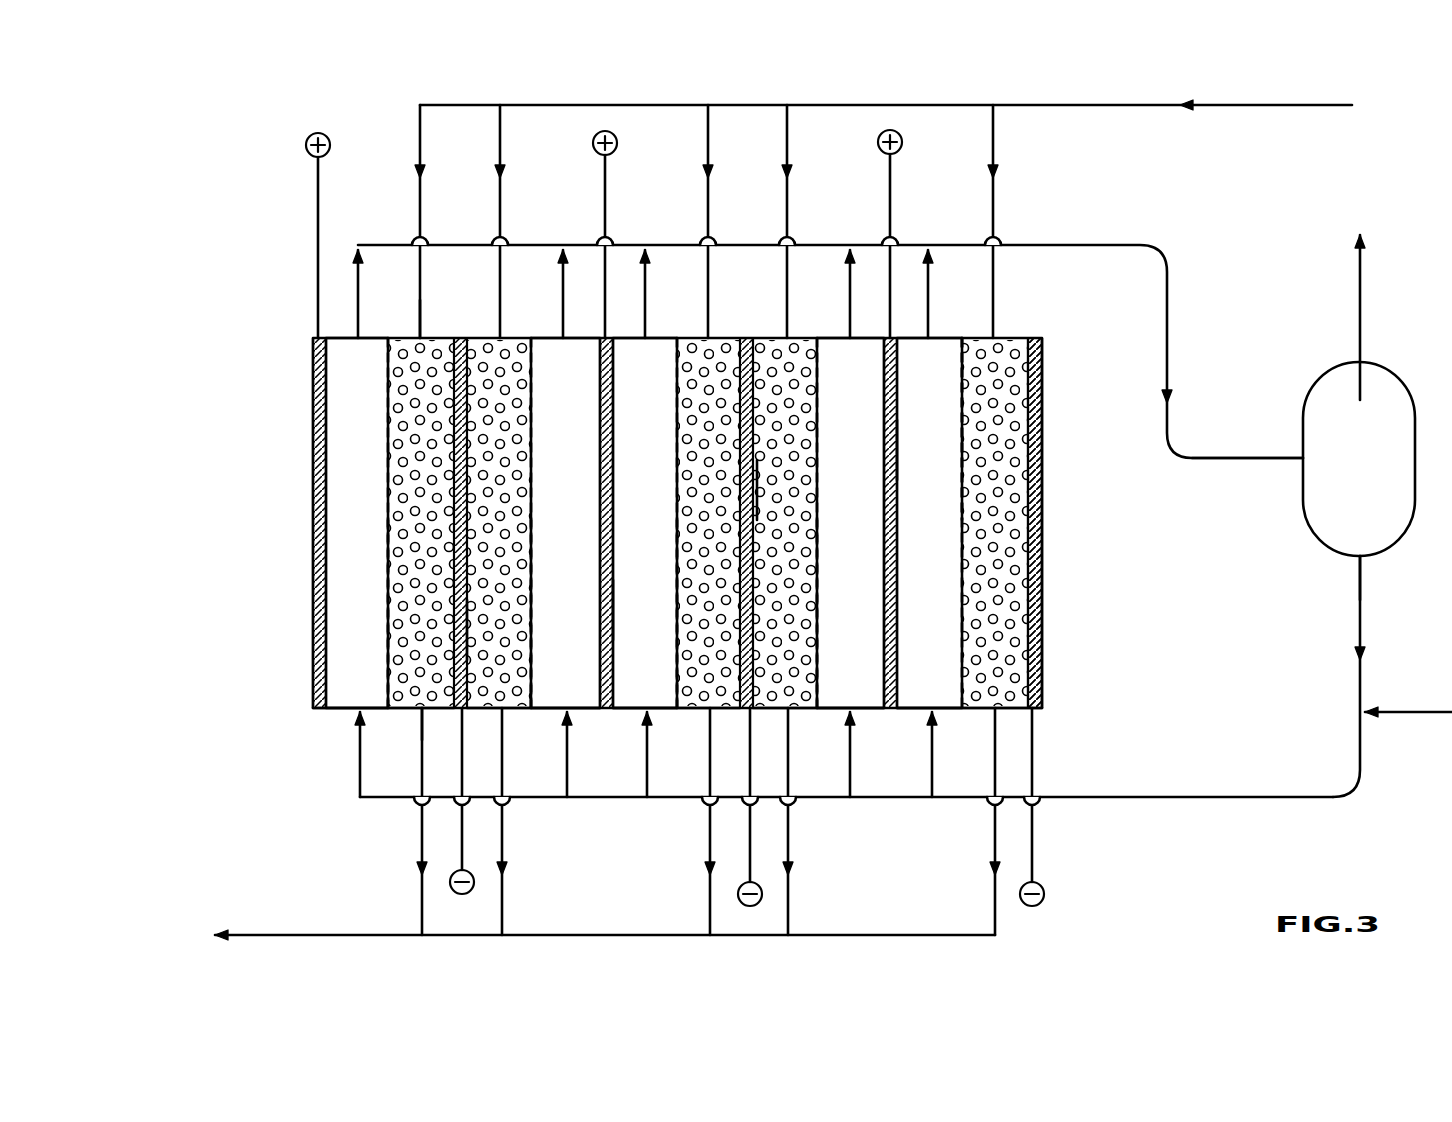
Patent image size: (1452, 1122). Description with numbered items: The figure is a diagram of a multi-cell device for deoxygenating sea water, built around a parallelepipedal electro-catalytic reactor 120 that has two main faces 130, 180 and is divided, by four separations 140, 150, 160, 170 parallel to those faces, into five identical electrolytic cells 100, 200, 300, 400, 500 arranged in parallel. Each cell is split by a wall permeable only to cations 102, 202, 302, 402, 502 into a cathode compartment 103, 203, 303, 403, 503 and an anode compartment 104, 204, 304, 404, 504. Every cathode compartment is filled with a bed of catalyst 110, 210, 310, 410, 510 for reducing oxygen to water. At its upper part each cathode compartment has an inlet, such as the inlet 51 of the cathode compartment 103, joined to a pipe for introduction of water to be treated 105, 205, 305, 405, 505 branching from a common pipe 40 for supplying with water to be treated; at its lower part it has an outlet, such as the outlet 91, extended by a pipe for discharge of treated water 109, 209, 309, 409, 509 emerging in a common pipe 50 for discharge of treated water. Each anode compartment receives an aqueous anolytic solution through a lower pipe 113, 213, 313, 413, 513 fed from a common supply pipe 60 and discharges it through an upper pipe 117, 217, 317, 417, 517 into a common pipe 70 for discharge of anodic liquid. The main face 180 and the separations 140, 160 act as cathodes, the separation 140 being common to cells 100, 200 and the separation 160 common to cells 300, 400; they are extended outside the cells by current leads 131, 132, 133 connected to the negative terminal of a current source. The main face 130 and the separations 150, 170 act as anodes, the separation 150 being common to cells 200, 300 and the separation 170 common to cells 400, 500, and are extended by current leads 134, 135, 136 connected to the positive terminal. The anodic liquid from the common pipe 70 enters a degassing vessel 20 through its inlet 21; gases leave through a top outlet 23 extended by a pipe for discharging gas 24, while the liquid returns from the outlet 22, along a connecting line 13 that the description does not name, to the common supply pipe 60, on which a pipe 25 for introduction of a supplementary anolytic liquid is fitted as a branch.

The conduit 13 is at (1362, 585).
The degassing vessel 20 is at (1323, 417).
The inlet 21 is at (1303, 458).
The outlet 22 is at (1360, 560).
The outlet for the gases 23 is at (1360, 362).
The pipe for discharging gas 24 is at (1362, 305).
The pipe for introduction of a supplementary liquid 25 is at (1445, 712).
The common pipe for supplying with water to be treated 40 is at (1245, 105).
The common pipe for discharge of treated water 50 is at (833, 932).
The inlet 51 is at (418, 333).
The common supply pipe 60 is at (1223, 790).
The common pipe for discharge of anodic liquid 70 is at (1167, 305).
The outlet 91 is at (410, 708).
The electrolytic cell 100 is at (335, 708).
The wall permeable only to cations 102 is at (388, 612).
The cathode compartment 103 is at (410, 597).
The anode compartment 104 is at (340, 518).
The pipe for introduction of water to be treated 105 is at (420, 145).
The pipe for discharge of treated water 109 is at (422, 847).
The bed of catalyst 110 is at (388, 410).
The pipe for the introduction of a liquid 113 is at (360, 778).
The pipe for the discharge of the liquid 117 is at (353, 280).
The electro-catalytic reactor 120 is at (272, 330).
The main face 130 is at (313, 462).
The current lead 131 is at (462, 865).
The current lead 132 is at (750, 870).
The current lead 133 is at (1032, 823).
The current lead 134 is at (313, 195).
The current lead 135 is at (605, 175).
The current lead 136 is at (890, 190).
The separation 140 is at (467, 633).
The separation 150 is at (613, 603).
The separation 160 is at (757, 487).
The separation 170 is at (898, 442).
The main face 180 is at (1043, 410).
The electrolytic cell 200 is at (567, 708).
The wall permeable only to cations 202 is at (533, 523).
The cathode compartment 203 is at (500, 570).
The anode compartment 204 is at (583, 672).
The pipe for introduction of water to be treated 205 is at (500, 143).
The pipe for discharge of treated water 209 is at (502, 840).
The bed of catalyst 210 is at (503, 430).
The pipe for the introduction of a liquid 213 is at (567, 750).
The pipe for the discharge of the liquid 217 is at (563, 318).
The electrolytic cell 300 is at (662, 708).
The wall permeable only to cations 302 is at (677, 487).
The cathode compartment 303 is at (677, 545).
The anode compartment 304 is at (664, 672).
The pipe for introduction of water to be treated 305 is at (708, 128).
The pipe for discharge of treated water 309 is at (710, 920).
The bed of catalyst 310 is at (677, 390).
The pipe for the introduction of a liquid 313 is at (647, 765).
The pipe for the discharge of the liquid 317 is at (648, 318).
The electrolytic cell 400 is at (827, 708).
The wall permeable only to cations 402 is at (820, 560).
The cathode compartment 403 is at (800, 418).
The anode compartment 404 is at (869, 672).
The pipe for introduction of water to be treated 405 is at (787, 157).
The pipe for discharge of treated water 409 is at (792, 853).
The bed of catalyst 410 is at (820, 635).
The pipe for the introduction of a liquid 413 is at (850, 777).
The pipe for the discharge of the liquid 417 is at (850, 315).
The electrolytic cell 500 is at (985, 712).
The wall permeable only to cations 502 is at (960, 598).
The cathode compartment 503 is at (1000, 530).
The anode compartment 504 is at (937, 482).
The pipe for introduction of water to be treated 505 is at (993, 130).
The pipe for discharge of treated water 509 is at (995, 895).
The bed of catalyst 510 is at (967, 655).
The pipe for the introduction of a liquid 513 is at (938, 762).
The pipe for the discharge of the liquid 517 is at (928, 310).